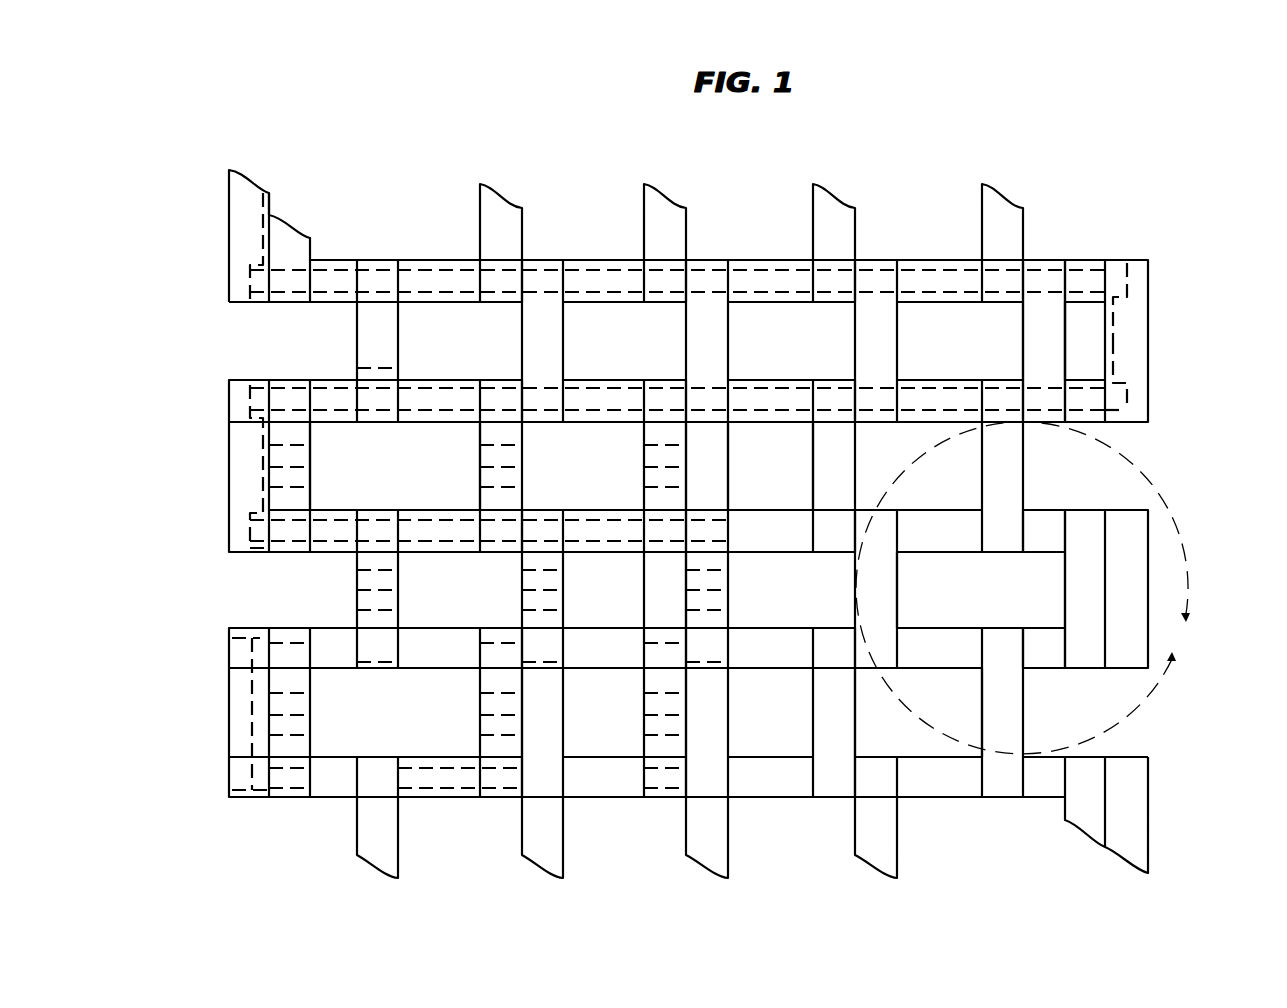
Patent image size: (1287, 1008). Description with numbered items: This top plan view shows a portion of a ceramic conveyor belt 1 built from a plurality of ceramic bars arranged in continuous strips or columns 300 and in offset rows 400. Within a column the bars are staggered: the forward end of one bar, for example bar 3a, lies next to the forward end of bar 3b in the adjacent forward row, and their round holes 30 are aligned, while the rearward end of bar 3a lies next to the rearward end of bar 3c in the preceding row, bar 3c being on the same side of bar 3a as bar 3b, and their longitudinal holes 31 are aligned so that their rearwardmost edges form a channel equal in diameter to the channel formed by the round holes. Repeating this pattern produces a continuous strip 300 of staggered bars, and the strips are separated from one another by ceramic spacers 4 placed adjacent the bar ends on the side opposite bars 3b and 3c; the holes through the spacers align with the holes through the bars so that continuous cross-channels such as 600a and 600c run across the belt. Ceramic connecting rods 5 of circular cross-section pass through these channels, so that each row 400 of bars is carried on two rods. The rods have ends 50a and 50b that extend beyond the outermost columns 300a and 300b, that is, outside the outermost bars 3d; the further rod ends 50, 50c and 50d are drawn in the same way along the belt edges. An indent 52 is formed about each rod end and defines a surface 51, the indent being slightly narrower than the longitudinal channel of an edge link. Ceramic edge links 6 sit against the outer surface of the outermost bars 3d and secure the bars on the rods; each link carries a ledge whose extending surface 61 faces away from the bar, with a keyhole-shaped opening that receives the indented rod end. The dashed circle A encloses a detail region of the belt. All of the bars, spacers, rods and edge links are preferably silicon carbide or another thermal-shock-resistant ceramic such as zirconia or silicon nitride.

The ceramic belt 1 is at (663, 868).
The ceramic bar 3a is at (896, 597).
The ceramic bar 3b is at (809, 472).
The ceramic bar 3c is at (856, 740).
The outermost bar 3d is at (316, 475).
The ceramic spacer 4 is at (1040, 504).
The connecting rod 5 is at (1043, 280).
The ceramic edge link 6 is at (1150, 792).
The round hole 30 is at (694, 580).
The longitudinal hole 31 is at (702, 650).
The left edge member 50 is at (246, 528).
The rod end 50a is at (1133, 293).
The rod end 50b is at (246, 283).
The right edge member 50c is at (1182, 341).
The left edge member middle 50d is at (246, 403).
The surface 51 is at (1107, 378).
The indent 52 is at (1107, 417).
The extending surface 61 is at (1116, 330).
The column 300 is at (658, 185).
The outermost column 300a is at (1082, 832).
The outermost column 300b is at (282, 800).
The row 400 is at (331, 593).
The horizontal band 600a is at (791, 284).
The horizontal band 600c is at (800, 399).
The detail region A is at (1023, 588).